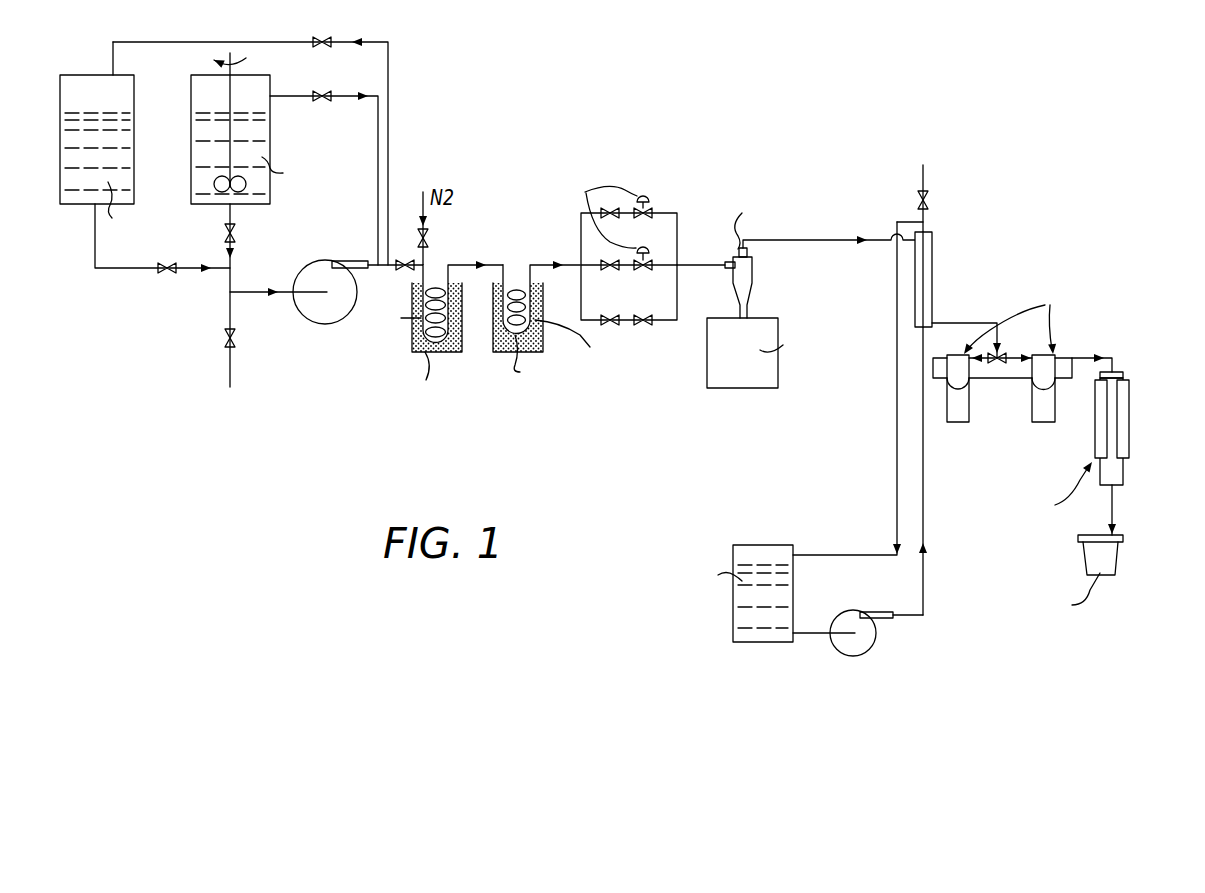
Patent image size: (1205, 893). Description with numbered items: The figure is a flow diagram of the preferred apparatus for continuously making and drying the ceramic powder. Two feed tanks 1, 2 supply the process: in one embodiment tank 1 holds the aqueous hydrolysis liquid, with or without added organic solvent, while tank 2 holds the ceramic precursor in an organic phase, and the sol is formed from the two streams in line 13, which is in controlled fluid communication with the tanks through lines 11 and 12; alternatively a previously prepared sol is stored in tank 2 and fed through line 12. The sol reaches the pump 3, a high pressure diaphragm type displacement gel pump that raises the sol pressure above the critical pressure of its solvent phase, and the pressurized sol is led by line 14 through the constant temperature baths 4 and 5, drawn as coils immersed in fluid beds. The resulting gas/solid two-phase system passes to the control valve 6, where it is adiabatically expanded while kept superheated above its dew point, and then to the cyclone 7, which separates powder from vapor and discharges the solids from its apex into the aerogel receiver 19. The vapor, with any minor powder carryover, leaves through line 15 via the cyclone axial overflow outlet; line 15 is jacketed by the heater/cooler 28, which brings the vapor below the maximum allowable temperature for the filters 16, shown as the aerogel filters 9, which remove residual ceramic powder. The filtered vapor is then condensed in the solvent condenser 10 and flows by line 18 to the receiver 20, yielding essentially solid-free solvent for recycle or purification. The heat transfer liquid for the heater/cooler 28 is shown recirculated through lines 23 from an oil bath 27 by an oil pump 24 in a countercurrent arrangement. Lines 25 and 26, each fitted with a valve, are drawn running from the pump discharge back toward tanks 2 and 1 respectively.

The feed tank 1 is at (79, 88).
The feed tank 2 is at (258, 70).
The pump 3 is at (328, 345).
The constant temperature bath 4 is at (458, 352).
The constant temperature bath 5 is at (540, 345).
The control valve 6 is at (660, 190).
The cyclone 7 is at (753, 272).
The aerogel filters 9 is at (1045, 408).
The solvent condenser 10 is at (1127, 441).
The line 11 is at (170, 280).
The line 12 is at (238, 233).
The line 13 is at (278, 282).
The line 14 is at (403, 272).
The exit line 15 is at (815, 238).
The filter 16 is at (962, 322).
The line 18 is at (1115, 503).
The receiver 19 is at (757, 380).
The receiver 20 is at (1115, 560).
The line 23 is at (897, 478).
The oil pump 24 is at (897, 660).
The line 25 is at (331, 95).
The line 26 is at (390, 66).
The oil bath 27 is at (765, 545).
The heater/cooler 28 is at (936, 241).